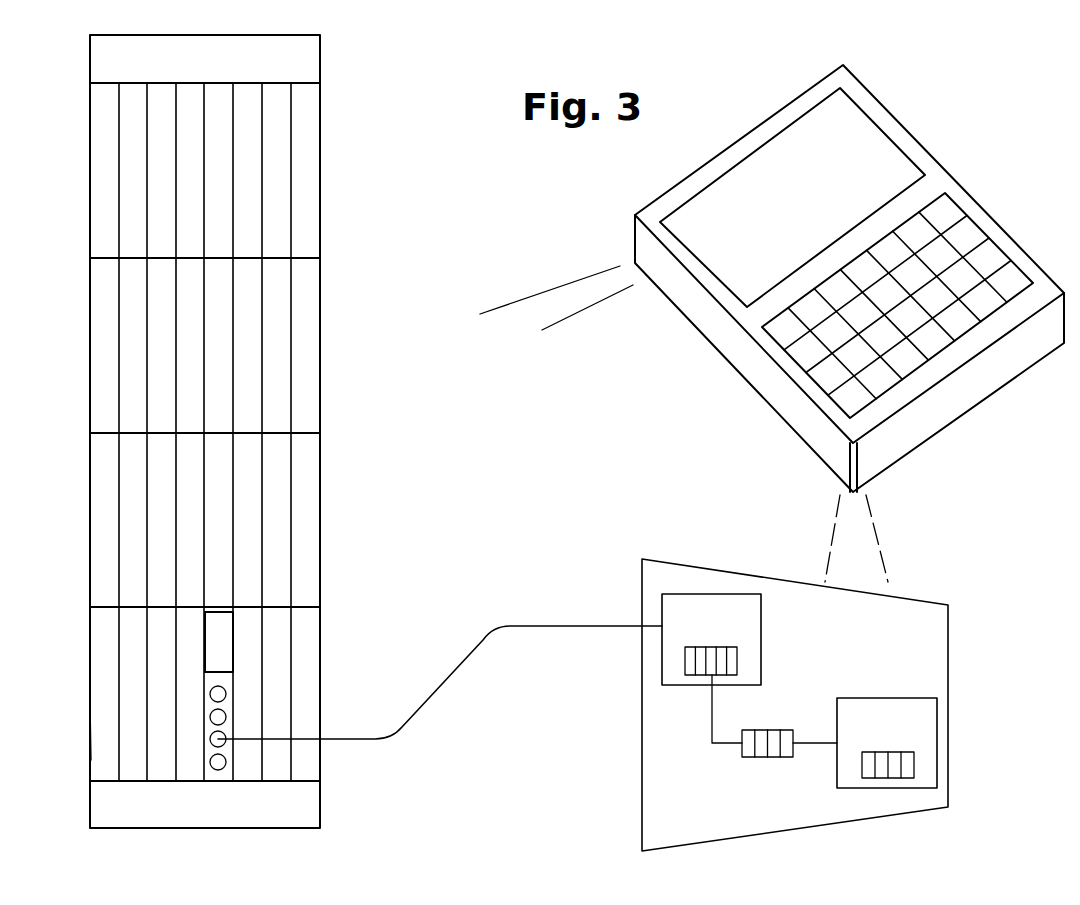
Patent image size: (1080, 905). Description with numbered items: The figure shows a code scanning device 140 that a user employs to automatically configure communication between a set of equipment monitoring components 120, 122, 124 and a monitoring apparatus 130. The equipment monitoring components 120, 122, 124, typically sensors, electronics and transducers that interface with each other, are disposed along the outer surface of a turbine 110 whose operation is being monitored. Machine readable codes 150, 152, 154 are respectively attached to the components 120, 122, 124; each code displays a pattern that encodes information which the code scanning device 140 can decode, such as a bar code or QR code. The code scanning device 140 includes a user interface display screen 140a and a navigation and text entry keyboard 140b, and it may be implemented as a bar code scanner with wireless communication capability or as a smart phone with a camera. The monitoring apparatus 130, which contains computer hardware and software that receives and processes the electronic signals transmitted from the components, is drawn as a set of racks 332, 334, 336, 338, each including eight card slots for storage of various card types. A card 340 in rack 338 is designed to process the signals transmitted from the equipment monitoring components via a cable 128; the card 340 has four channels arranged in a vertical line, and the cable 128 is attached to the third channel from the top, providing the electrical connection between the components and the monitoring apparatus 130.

The monitoring apparatus 130 is at (226, 68).
The rack 332 is at (352, 180).
The rack 334 is at (360, 342).
The rack 336 is at (350, 518).
The rack 338 is at (350, 687).
The card 340 is at (215, 633).
The cable 128 is at (577, 626).
The code scanning device 140 is at (772, 377).
The user interface display screen 140a is at (825, 210).
The navigation and text entry keyboard 140b is at (945, 260).
The turbine 110 is at (845, 639).
The equipment monitoring component 120 is at (730, 624).
The equipment monitoring component 122 is at (720, 745).
The equipment monitoring component 124 is at (905, 728).
The machine readable code 150 is at (693, 675).
The machine readable code 152 is at (757, 758).
The machine readable code 154 is at (860, 762).